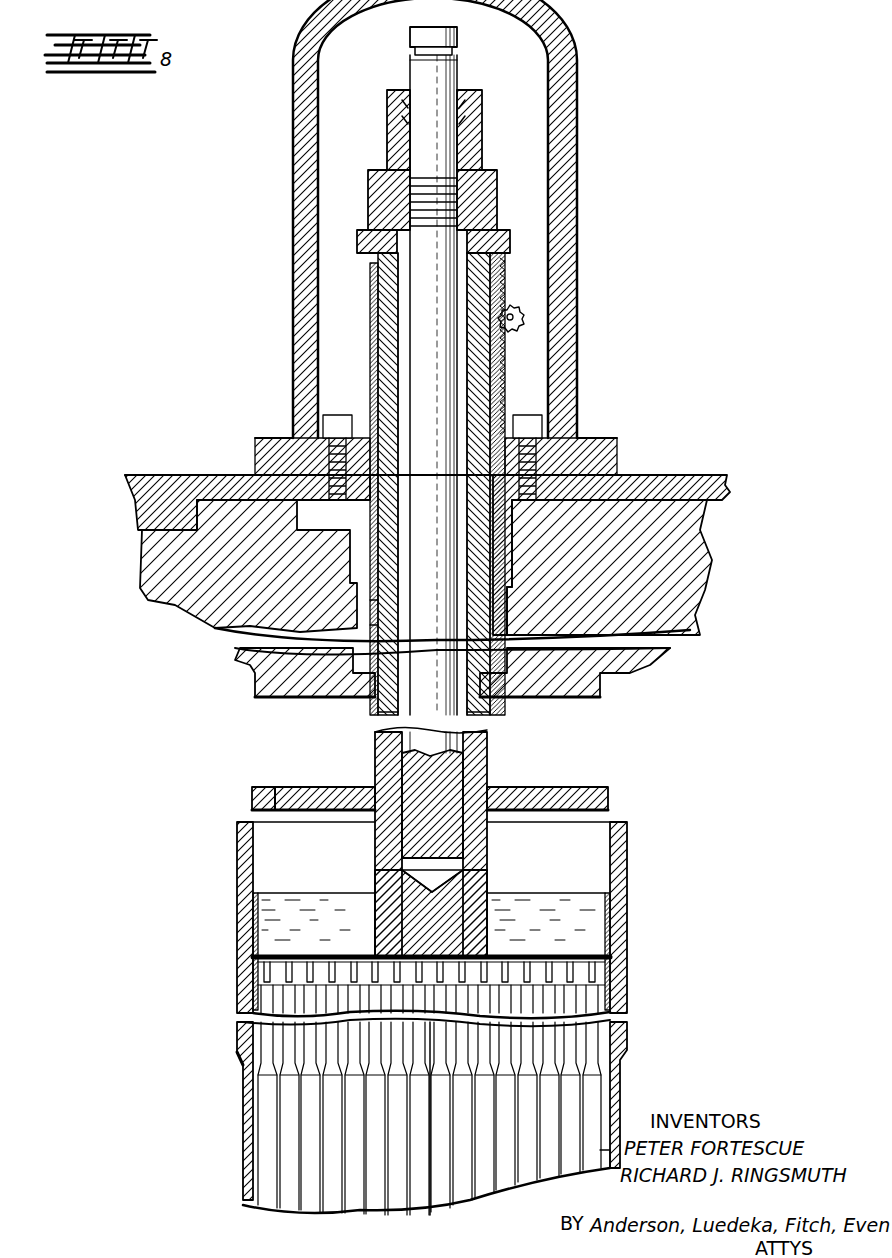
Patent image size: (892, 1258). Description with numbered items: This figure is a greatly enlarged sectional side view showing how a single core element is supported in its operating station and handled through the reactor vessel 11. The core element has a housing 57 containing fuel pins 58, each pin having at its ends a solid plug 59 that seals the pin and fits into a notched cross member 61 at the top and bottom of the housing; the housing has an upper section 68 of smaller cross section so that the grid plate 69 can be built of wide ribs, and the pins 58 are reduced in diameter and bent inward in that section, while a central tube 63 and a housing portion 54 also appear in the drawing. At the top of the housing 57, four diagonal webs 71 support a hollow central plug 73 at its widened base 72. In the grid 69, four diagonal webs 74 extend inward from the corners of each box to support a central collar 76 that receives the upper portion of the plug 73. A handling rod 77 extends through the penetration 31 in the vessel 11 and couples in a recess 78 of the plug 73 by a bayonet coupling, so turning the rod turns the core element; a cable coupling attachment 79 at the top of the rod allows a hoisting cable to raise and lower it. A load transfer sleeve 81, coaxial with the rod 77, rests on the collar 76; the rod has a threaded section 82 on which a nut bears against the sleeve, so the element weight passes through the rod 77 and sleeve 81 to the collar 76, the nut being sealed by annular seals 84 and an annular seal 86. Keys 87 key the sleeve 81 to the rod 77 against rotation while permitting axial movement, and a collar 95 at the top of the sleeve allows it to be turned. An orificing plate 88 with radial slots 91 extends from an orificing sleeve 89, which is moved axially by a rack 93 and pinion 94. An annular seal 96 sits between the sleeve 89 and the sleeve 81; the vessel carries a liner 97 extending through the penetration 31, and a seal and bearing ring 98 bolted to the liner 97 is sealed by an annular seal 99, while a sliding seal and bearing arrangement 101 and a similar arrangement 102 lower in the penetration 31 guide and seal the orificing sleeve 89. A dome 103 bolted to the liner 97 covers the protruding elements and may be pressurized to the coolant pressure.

The reactor vessel 11 is at (212, 505).
The penetration 31 is at (380, 563).
The fuel element housing 54 is at (245, 1038).
The housing 57 is at (622, 1130).
The pin 58 is at (312, 1080).
The plug 59 is at (570, 963).
The cross member 61 is at (256, 963).
The central tube 63 is at (428, 1208).
The upper section 68 is at (256, 938).
The grid plate 69 is at (245, 885).
The diagonal webs 71 is at (256, 918).
The widened base 72 is at (425, 915).
The central plug 73 is at (463, 877).
The diagonal webs 74 is at (262, 858).
The central collar 76 is at (487, 850).
The handling rod 77 is at (447, 597).
The recess 78 is at (415, 866).
The cable coupling attachment 79 is at (460, 40).
The load transfer sleeve 81 is at (490, 712).
The threaded section 82 is at (445, 195).
The annular seals 84 is at (462, 122).
The annular seal 86 is at (478, 238).
The keys 87 is at (465, 335).
The orificing plate 88 is at (262, 790).
The orificing sleeve 89 is at (376, 712).
The slots 91 is at (285, 800).
The rack 93 is at (500, 292).
The pinion 94 is at (518, 313).
The collar 95 is at (362, 232).
The annular seal 96 is at (370, 270).
The liner 97 is at (163, 482).
The seal and bearing ring 98 is at (500, 428).
The annular seal 99 is at (548, 436).
The sliding seal and bearing arrangement 101 is at (352, 418).
The seal and bearing arrangement 102 is at (378, 614).
The dome 103 is at (575, 125).